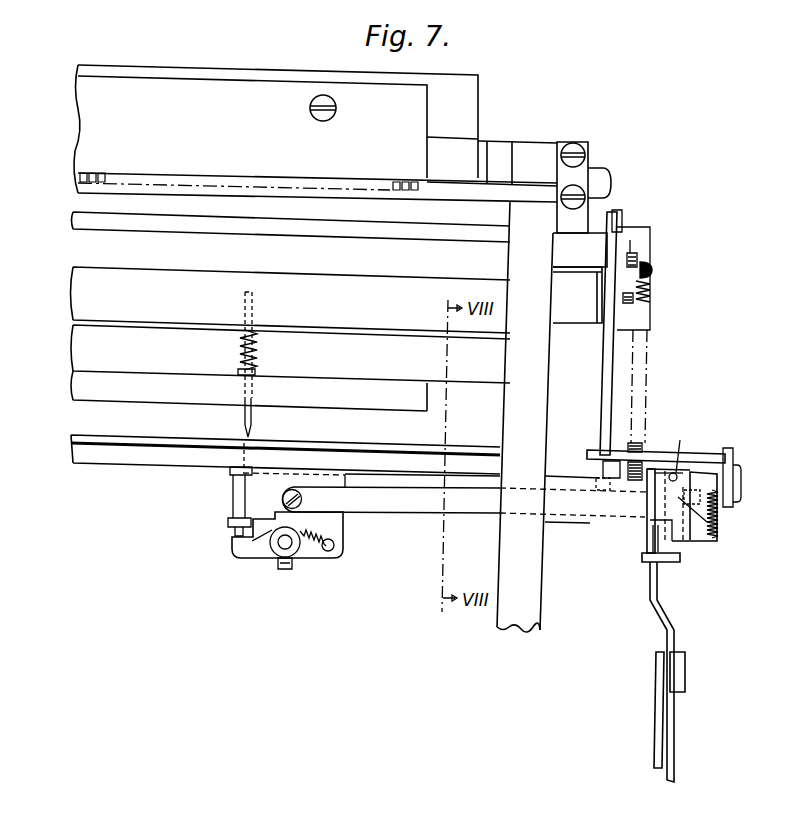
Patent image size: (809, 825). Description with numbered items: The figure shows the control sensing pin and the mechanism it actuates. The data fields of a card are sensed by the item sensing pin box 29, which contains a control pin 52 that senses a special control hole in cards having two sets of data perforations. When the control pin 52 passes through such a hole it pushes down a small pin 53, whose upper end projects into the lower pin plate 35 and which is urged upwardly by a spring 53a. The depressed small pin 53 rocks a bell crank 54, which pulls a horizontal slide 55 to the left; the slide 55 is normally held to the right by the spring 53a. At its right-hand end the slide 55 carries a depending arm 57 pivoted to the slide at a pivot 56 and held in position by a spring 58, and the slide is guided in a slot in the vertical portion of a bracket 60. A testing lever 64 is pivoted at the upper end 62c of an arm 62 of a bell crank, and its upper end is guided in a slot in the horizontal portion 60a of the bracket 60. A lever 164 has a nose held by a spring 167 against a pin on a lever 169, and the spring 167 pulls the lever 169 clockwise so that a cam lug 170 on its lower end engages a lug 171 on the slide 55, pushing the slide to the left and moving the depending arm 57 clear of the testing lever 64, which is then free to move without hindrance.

The item sensing pin box 29 is at (291, 237).
The control pin 52 is at (244, 304).
The lower pin plate 35 is at (90, 453).
The small pin 53 is at (242, 452).
The bell crank 54 is at (263, 546).
The spring 53a is at (300, 541).
The horizontal slide 55 is at (418, 506).
The lever 164 is at (622, 217).
The spring 167 is at (645, 265).
The lever 169 is at (607, 357).
The cam lug 170 is at (597, 456).
The lug 171 is at (622, 478).
The pivot 56 is at (673, 473).
The depending arm 57 is at (712, 526).
The spring 58 is at (717, 505).
The bracket 60 is at (645, 523).
The horizontal portion 60a is at (665, 562).
The testing lever 64 is at (658, 622).
The arm of bell crank 62 is at (657, 722).
The upper end 62c is at (681, 677).